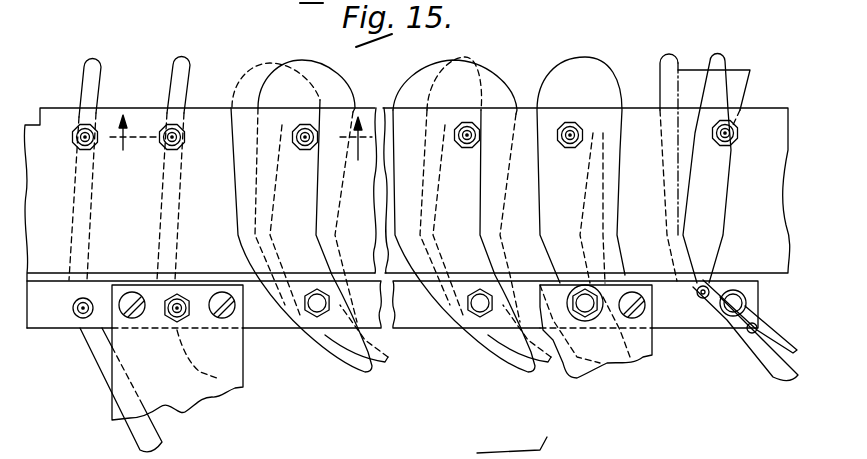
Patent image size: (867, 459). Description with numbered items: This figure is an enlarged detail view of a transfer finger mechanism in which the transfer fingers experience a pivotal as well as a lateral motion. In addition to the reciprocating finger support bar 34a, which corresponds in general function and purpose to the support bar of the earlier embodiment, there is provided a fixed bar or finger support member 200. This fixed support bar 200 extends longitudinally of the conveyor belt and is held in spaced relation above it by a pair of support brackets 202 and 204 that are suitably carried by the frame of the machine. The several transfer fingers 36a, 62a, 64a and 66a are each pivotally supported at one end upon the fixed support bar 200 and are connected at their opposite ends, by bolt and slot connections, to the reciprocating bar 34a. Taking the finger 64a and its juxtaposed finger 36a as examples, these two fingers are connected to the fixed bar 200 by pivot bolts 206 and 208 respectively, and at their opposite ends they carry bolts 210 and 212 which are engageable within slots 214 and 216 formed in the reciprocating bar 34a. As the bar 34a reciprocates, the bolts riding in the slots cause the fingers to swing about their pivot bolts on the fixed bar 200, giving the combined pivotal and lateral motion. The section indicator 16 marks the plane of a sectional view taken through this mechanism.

The section line 16 is at (240, 147).
The reciprocating finger support bar 34a is at (630, 127).
The transfer finger 36a is at (447, 58).
The transfer finger 62a is at (676, 65).
The transfer finger 64a is at (185, 72).
The transfer finger 66a is at (102, 72).
The fixed finger support bar 200 is at (405, 315).
The support bracket 202 is at (227, 385).
The support bracket 204 is at (640, 353).
The pivot bolt 206 is at (170, 320).
The pivot bolt 208 is at (317, 308).
The bolt 210 is at (181, 128).
The bolt 212 is at (320, 131).
The slot 214 is at (174, 152).
The slot 216 is at (297, 150).